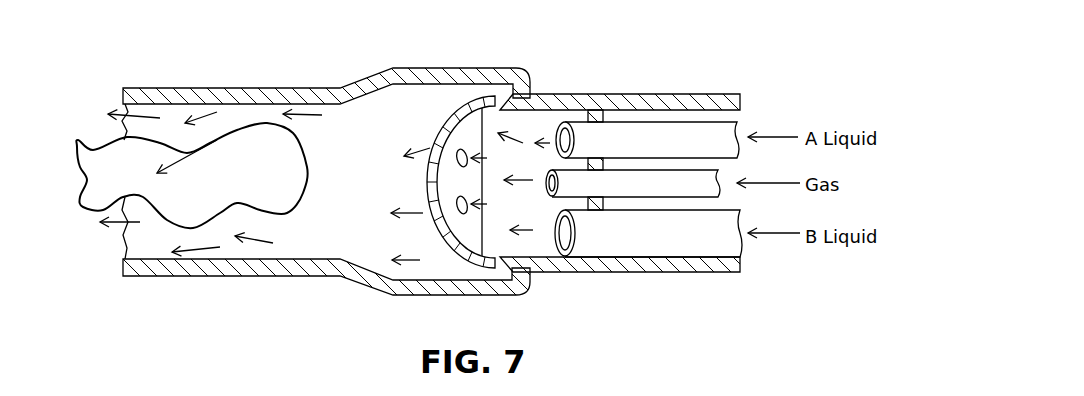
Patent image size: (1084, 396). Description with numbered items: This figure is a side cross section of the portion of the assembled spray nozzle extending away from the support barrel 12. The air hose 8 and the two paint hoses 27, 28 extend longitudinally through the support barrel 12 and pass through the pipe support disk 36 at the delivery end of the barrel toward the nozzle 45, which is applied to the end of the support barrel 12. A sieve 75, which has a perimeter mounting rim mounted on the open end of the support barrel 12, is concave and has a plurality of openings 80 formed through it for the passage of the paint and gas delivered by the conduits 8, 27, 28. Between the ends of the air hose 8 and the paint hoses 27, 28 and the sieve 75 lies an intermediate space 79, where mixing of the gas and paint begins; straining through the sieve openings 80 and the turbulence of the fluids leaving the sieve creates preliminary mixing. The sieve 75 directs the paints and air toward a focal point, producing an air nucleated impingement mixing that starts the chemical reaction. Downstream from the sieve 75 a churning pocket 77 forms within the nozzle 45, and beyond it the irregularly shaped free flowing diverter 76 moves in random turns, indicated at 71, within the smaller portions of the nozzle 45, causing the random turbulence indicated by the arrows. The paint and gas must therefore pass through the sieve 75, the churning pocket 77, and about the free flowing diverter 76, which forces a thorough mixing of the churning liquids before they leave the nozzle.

The air hose 8 is at (678, 170).
The support barrel 12 is at (668, 274).
The paint hose 27 is at (635, 151).
The paint hose 28 is at (635, 249).
The pipe support disk 36 is at (605, 201).
The nozzle 45 is at (305, 82).
The random turns of the diverter 71 is at (258, 241).
The sieve 75 is at (442, 250).
The free flowing diverter 76 is at (252, 193).
The churning pocket 77 is at (374, 196).
The intermediate space 79 is at (532, 213).
The openings 80 is at (440, 150).